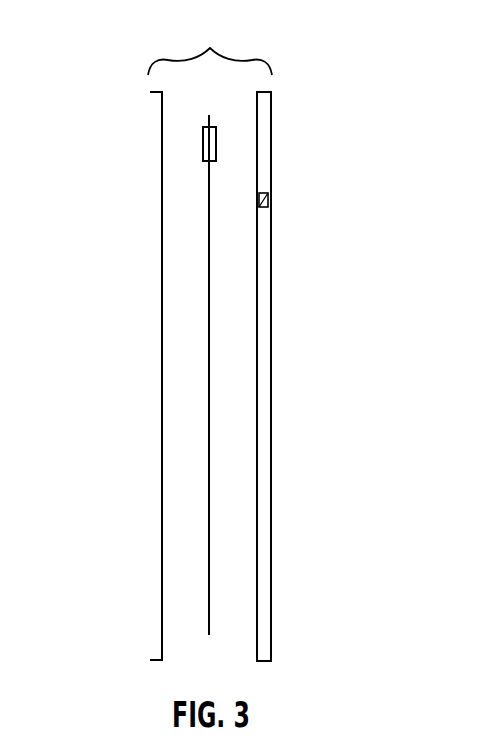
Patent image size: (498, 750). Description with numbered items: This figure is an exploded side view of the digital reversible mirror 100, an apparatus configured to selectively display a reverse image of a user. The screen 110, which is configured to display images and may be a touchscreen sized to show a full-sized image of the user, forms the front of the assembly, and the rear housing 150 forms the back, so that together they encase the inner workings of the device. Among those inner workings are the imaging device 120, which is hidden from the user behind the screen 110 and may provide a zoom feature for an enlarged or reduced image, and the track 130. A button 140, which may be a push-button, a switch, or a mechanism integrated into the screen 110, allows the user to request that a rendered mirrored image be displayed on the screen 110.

The digital reversible mirror 100 is at (210, 45).
The screen 110 is at (271, 383).
The imaging device 120 is at (203, 143).
The track 130 is at (209, 400).
The button 140 is at (270, 200).
The rear housing 150 is at (162, 300).